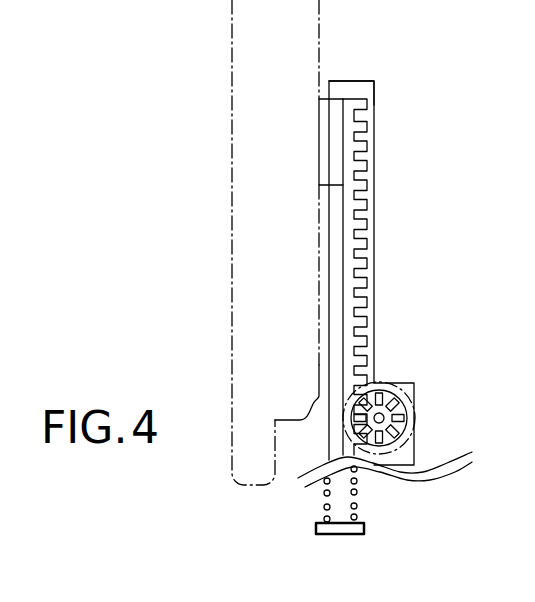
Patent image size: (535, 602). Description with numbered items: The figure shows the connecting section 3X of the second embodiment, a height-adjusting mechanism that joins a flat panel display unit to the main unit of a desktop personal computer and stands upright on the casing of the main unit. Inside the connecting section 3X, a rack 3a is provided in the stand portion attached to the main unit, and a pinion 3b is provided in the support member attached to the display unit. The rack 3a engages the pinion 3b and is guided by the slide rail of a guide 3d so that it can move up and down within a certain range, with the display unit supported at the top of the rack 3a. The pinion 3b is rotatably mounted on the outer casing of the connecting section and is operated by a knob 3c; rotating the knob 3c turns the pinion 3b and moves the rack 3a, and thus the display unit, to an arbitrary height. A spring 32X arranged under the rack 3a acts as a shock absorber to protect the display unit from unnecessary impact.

The connecting section 3X is at (393, 259).
The rack 3a is at (374, 180).
The pinion 3b is at (386, 376).
The knob 3c is at (412, 428).
The guide 3d is at (375, 105).
The spring 32X is at (355, 505).